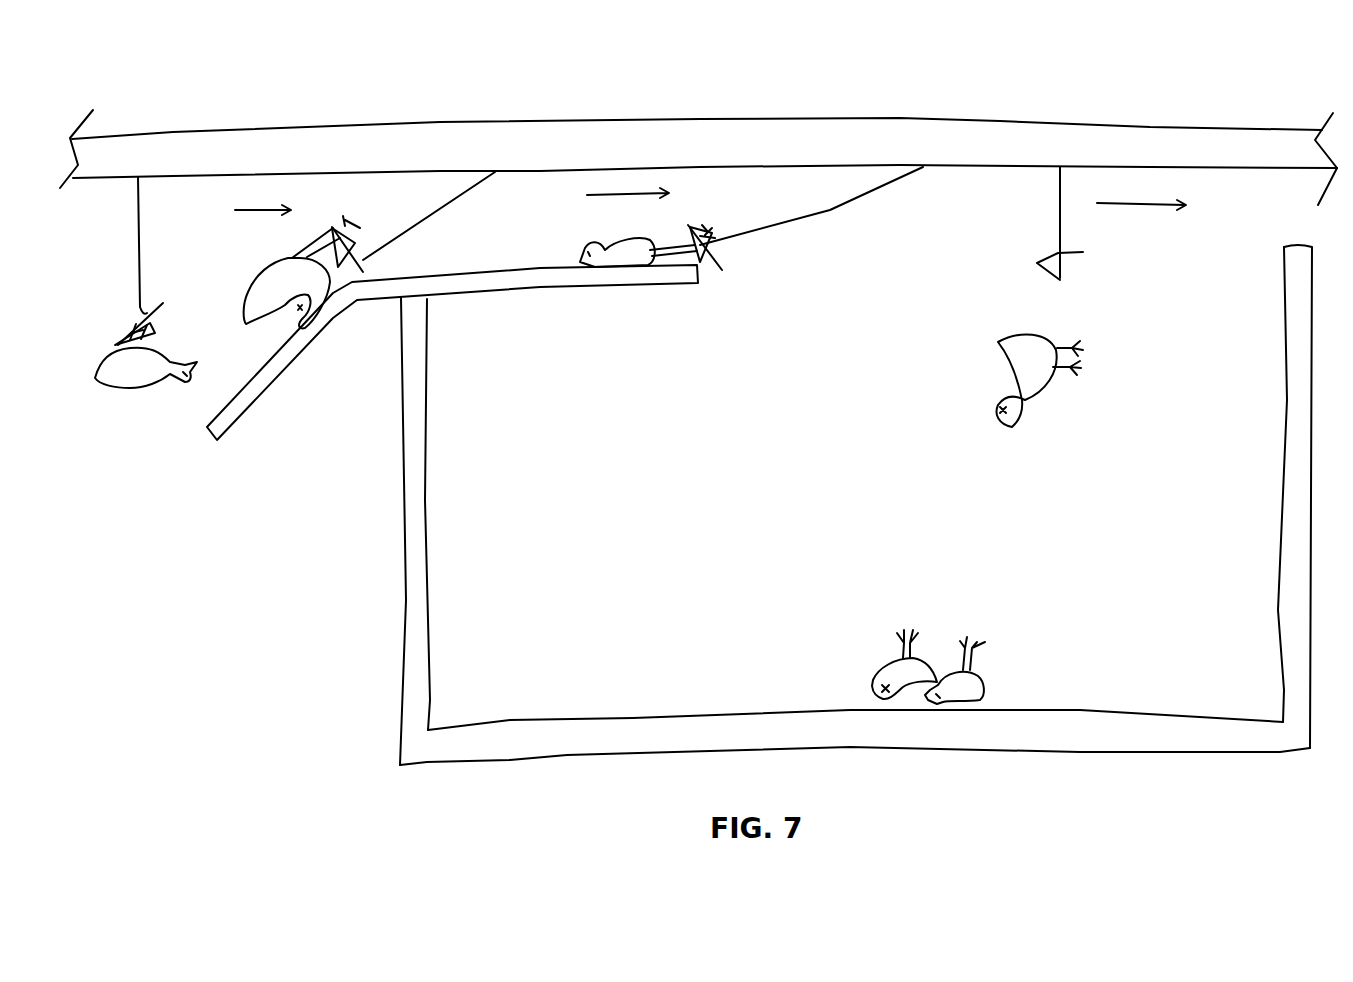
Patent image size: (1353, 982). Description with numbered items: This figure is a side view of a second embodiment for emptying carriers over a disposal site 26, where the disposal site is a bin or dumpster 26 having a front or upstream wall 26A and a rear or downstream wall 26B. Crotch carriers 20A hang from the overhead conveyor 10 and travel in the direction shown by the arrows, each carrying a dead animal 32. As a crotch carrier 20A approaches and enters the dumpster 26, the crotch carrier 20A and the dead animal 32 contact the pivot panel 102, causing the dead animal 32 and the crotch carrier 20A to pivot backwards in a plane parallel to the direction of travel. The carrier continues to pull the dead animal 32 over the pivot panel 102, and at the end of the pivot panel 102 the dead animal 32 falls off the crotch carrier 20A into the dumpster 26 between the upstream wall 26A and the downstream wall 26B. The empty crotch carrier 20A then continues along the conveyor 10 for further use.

The conveyor 10 is at (298, 127).
The crotch carrier 20A is at (138, 246).
The dead animal 32 is at (113, 392).
The pivot panel 102 is at (232, 430).
The disposal site 26 is at (806, 505).
The front or upstream wall 26A is at (405, 545).
The rear or downstream wall 26B is at (1284, 527).